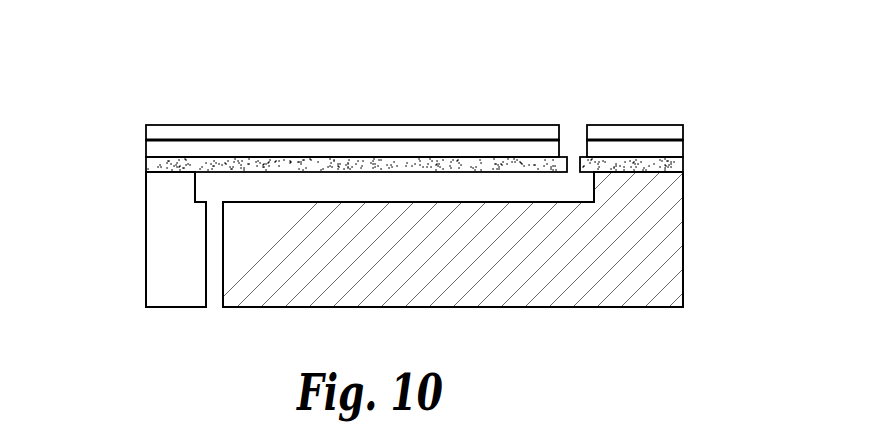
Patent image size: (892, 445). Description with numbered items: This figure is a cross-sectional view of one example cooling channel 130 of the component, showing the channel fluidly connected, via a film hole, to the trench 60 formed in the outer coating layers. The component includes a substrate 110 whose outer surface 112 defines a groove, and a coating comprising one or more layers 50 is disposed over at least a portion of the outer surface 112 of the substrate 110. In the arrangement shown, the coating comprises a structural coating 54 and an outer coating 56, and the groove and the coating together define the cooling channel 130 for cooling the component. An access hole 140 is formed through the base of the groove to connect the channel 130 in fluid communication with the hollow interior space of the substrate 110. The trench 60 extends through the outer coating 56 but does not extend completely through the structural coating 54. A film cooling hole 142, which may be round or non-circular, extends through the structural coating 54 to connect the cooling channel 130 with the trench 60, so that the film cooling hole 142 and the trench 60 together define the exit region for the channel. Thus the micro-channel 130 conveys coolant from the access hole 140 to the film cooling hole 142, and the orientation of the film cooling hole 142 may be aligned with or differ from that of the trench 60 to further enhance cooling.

The coating layers 50 is at (168, 132).
The structural coating 54 is at (147, 167).
The outer coating 56 is at (152, 148).
The trench 60 is at (573, 135).
The substrate 110 is at (663, 250).
The outer surface 112 is at (160, 174).
The cooling channel 130 is at (326, 184).
The access hole 140 is at (206, 253).
The film cooling hole 142 is at (570, 165).